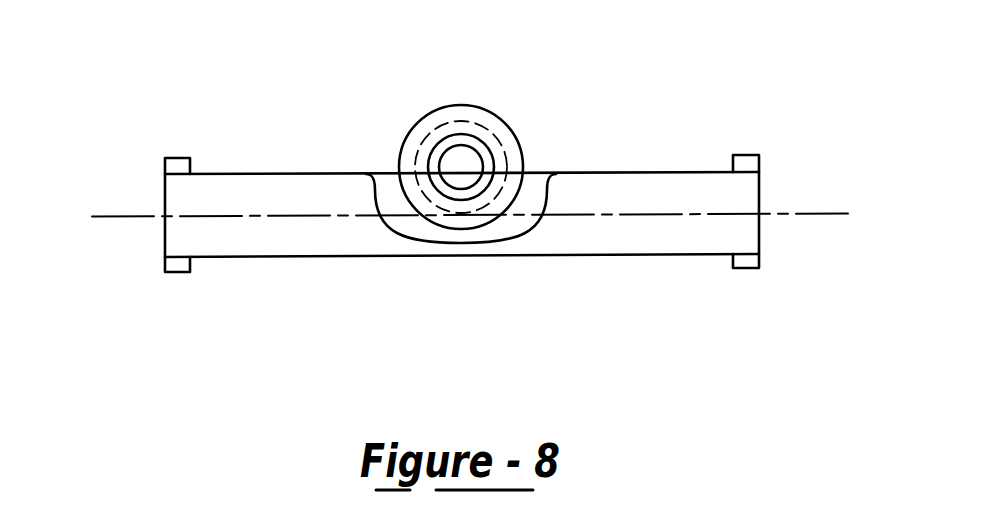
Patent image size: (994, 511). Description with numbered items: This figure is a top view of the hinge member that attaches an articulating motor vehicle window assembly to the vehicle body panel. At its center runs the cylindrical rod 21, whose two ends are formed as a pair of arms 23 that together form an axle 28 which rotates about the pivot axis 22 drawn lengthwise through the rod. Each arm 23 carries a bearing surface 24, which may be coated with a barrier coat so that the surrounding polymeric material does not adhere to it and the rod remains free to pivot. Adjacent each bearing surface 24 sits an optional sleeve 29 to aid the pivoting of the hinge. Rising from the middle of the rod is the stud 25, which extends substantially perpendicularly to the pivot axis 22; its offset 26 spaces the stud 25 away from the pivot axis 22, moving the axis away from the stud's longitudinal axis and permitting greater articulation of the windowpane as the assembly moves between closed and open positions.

The cylindrical rod 21 is at (507, 257).
The pivot axis 22 is at (634, 213).
The arm 23 is at (210, 193).
The bearing surface 24 is at (215, 240).
The stud 25 is at (513, 123).
The offset 26 is at (635, 168).
The axle 28 is at (290, 174).
The sleeve 29 is at (163, 262).